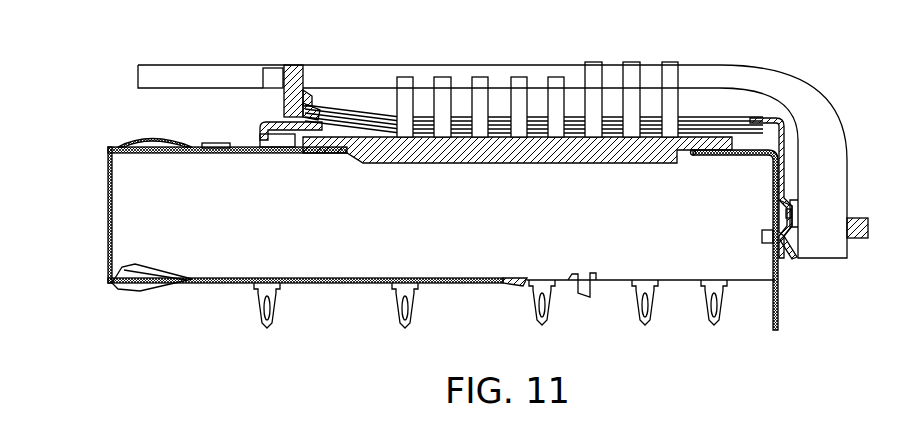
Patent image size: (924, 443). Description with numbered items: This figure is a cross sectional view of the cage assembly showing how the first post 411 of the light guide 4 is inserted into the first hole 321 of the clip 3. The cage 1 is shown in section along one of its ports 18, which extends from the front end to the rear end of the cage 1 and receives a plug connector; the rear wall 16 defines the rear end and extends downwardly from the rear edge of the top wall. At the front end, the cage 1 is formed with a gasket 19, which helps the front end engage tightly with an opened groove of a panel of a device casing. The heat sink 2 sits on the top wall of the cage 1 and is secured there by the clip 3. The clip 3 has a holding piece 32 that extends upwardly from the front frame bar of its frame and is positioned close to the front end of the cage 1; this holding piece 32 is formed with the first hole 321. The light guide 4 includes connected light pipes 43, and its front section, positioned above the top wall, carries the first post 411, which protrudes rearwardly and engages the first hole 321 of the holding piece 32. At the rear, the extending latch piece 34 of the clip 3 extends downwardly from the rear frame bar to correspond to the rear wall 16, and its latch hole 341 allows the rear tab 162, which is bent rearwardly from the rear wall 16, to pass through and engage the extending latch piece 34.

The cage 1 is at (140, 213).
The heat sink 2 is at (457, 150).
The clip 3 is at (255, 132).
The light guide 4 is at (383, 78).
The rear wall 16 is at (783, 197).
The port 18 is at (603, 232).
The gasket 19 is at (137, 143).
The holding piece 32 is at (303, 68).
The extending latch piece 34 is at (788, 252).
The light pipe 43 is at (500, 65).
The rear tab 162 is at (790, 212).
The first hole 321 is at (312, 96).
The latch hole 341 is at (783, 178).
The first post 411 is at (310, 110).